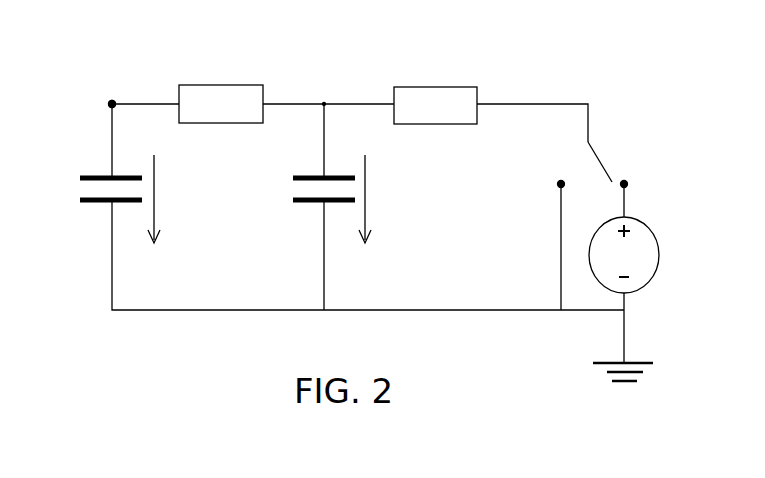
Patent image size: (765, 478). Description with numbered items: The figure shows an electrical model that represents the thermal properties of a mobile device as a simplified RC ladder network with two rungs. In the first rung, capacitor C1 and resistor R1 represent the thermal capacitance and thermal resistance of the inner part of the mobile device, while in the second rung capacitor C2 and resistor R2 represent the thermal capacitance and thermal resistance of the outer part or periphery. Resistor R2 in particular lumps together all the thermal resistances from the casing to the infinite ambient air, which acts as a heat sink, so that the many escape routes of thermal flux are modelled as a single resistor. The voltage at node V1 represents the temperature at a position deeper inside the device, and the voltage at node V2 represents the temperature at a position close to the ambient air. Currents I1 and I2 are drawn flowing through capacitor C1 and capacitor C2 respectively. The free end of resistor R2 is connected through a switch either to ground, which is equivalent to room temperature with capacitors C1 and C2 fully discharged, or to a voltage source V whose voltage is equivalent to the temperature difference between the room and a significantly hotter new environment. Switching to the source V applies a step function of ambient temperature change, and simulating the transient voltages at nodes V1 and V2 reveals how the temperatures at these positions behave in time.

The resistor R1 is at (221, 79).
The resistor R2 is at (435, 80).
The capacitor C1 is at (80, 187).
The capacitor C2 is at (293, 187).
The current through first capacitor I1 is at (156, 217).
The current through second capacitor I2 is at (368, 217).
The node V1 is at (88, 90).
The node V2 is at (324, 79).
The voltage source V is at (624, 231).